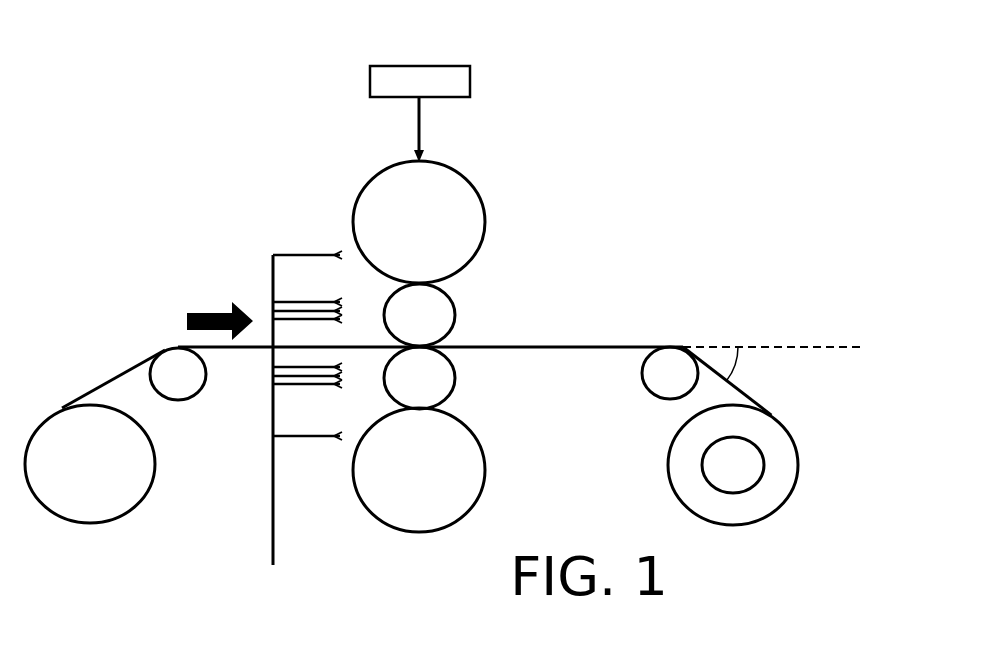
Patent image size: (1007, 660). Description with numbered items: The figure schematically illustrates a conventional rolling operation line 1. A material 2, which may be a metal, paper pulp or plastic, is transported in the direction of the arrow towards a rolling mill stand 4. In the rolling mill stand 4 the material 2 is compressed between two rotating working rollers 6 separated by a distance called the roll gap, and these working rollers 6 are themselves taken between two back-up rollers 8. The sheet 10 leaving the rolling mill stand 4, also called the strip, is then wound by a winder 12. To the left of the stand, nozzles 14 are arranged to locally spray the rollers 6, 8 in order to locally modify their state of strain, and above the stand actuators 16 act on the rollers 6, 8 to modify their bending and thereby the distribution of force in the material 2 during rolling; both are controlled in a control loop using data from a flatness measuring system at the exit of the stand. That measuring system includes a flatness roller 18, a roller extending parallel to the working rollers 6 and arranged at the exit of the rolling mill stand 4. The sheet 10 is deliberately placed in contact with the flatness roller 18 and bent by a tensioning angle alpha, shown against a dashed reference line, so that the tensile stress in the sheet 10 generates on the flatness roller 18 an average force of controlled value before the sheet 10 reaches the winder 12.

The rolling operation line 1 is at (692, 102).
The material 2 is at (245, 348).
The rolling mill stand 4 is at (498, 342).
The working rollers 6 is at (455, 308).
The back-up rollers 8 is at (473, 183).
The sheet 10 is at (582, 347).
The winder 12 is at (745, 455).
The nozzles 14 is at (325, 240).
The actuators 16 is at (470, 77).
The flatness roller 18 is at (642, 392).